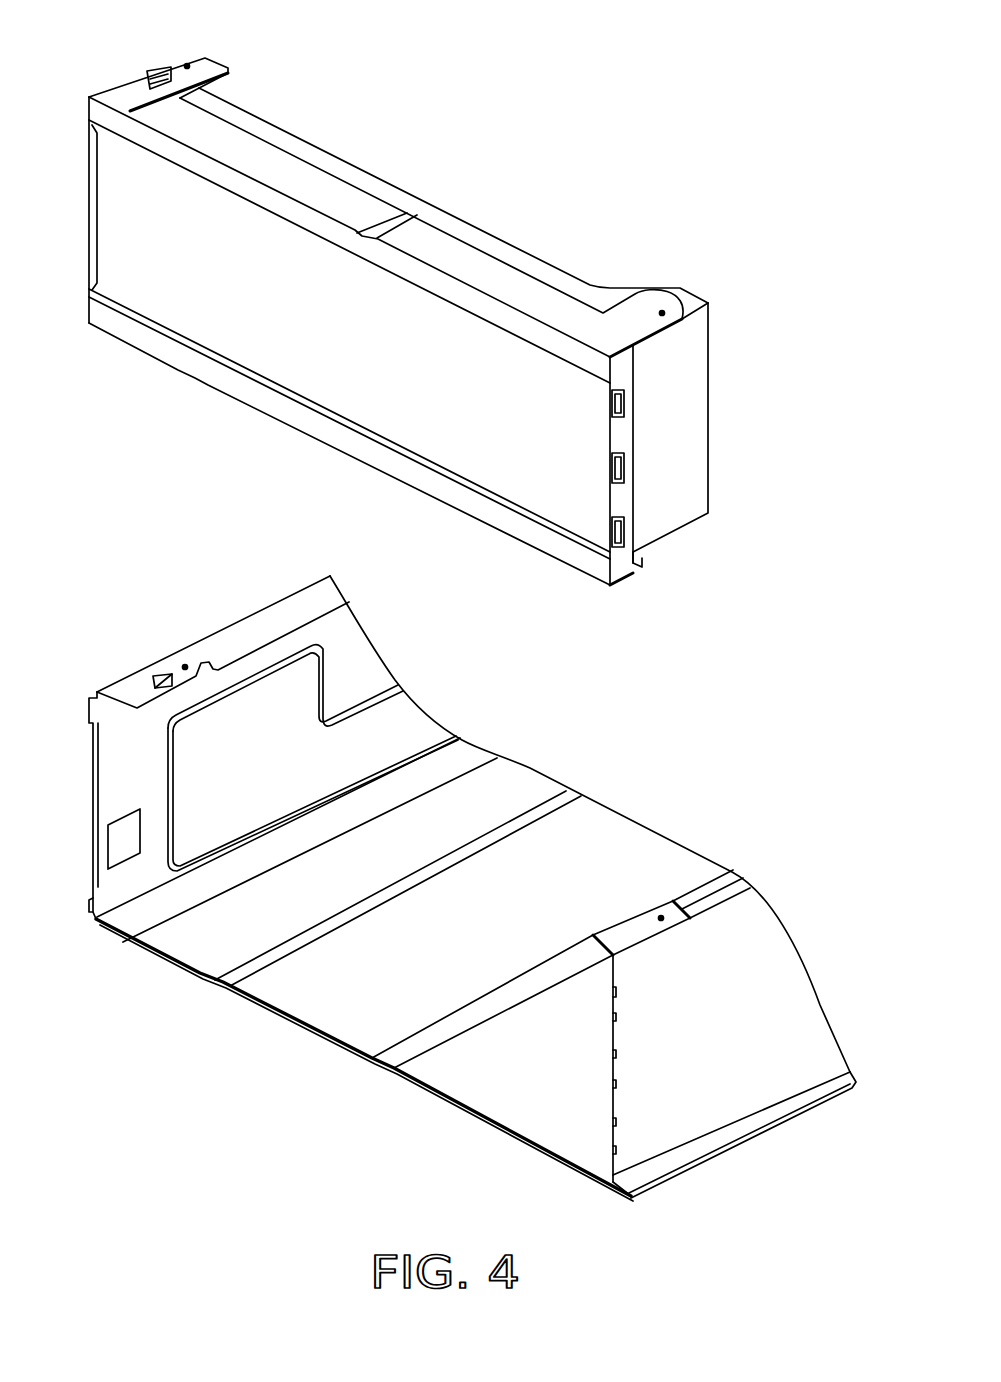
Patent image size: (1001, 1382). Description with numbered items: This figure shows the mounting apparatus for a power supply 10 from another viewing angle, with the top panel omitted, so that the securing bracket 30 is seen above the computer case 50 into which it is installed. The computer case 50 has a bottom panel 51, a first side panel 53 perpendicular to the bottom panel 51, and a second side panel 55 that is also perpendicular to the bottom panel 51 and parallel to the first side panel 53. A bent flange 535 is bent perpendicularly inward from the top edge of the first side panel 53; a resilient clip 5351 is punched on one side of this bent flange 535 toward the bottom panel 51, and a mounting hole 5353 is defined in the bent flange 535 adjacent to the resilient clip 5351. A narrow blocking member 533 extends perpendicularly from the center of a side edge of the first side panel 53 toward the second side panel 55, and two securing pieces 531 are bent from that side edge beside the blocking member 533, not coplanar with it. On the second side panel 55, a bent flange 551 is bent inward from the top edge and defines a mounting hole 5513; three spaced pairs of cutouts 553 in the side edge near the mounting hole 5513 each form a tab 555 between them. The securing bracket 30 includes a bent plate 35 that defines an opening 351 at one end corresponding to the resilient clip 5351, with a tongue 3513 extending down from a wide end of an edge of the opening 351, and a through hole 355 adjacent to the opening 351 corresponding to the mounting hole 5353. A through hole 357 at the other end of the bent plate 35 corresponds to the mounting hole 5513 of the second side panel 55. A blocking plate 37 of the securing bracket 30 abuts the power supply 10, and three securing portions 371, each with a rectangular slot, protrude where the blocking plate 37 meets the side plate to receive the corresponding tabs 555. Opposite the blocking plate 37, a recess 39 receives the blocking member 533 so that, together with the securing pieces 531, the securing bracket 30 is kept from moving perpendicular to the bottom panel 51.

The power supply 10 is at (475, 233).
The securing bracket 30 is at (272, 357).
The bent plate 35 is at (297, 185).
The opening 351 is at (153, 87).
The tongue 3513 is at (142, 68).
The through hole 355 is at (187, 63).
The through hole 357 is at (662, 310).
The blocking plate 37 is at (627, 497).
The securing portion 371 is at (622, 464).
The recess 39 is at (97, 248).
The computer case 50 is at (532, 762).
The bottom panel 51 is at (465, 1082).
The first side panel 53 is at (353, 655).
The securing piece 531 is at (92, 915).
The blocking member 533 is at (97, 753).
The bent flange 535 is at (278, 613).
The resilient clip 5351 is at (158, 684).
The mounting hole 5353 is at (185, 664).
The second side panel 55 is at (753, 967).
The bent flange 551 is at (713, 893).
The mounting hole 5513 is at (661, 915).
The cutout 553 is at (613, 1055).
The tab 555 is at (620, 1070).